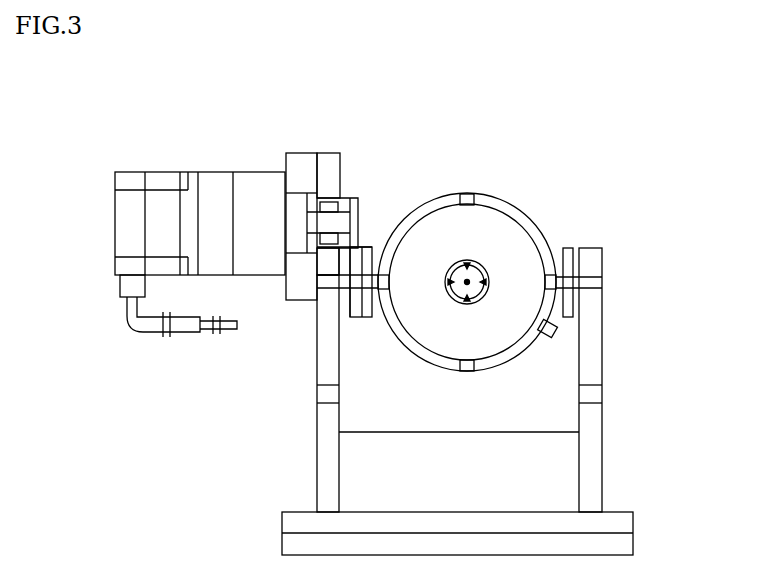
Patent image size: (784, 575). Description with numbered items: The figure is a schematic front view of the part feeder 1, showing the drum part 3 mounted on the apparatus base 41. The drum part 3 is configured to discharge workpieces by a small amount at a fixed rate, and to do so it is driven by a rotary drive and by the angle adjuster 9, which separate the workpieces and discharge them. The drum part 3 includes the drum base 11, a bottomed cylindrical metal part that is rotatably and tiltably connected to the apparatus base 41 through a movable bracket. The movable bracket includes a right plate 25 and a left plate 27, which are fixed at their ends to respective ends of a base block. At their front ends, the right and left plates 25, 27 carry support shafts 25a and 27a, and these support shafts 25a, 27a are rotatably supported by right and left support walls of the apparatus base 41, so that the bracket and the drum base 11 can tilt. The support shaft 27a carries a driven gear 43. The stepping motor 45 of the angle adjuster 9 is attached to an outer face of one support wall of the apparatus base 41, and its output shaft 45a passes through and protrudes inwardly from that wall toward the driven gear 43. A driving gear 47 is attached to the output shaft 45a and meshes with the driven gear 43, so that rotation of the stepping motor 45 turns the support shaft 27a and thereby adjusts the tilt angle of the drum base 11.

The part feeder 1 is at (512, 162).
The drum part 3 is at (515, 207).
The angle adjuster 9 is at (248, 162).
The drum base 11 is at (533, 217).
The right plate 25 is at (565, 250).
The support shaft 25a is at (603, 283).
The left plate 27 is at (366, 247).
The support shaft 27a is at (333, 283).
The apparatus base 41 is at (605, 350).
The driven gear 43 is at (352, 318).
The stepping motor 45 is at (211, 190).
The output shaft 45a is at (313, 225).
The driving gear 47 is at (358, 200).